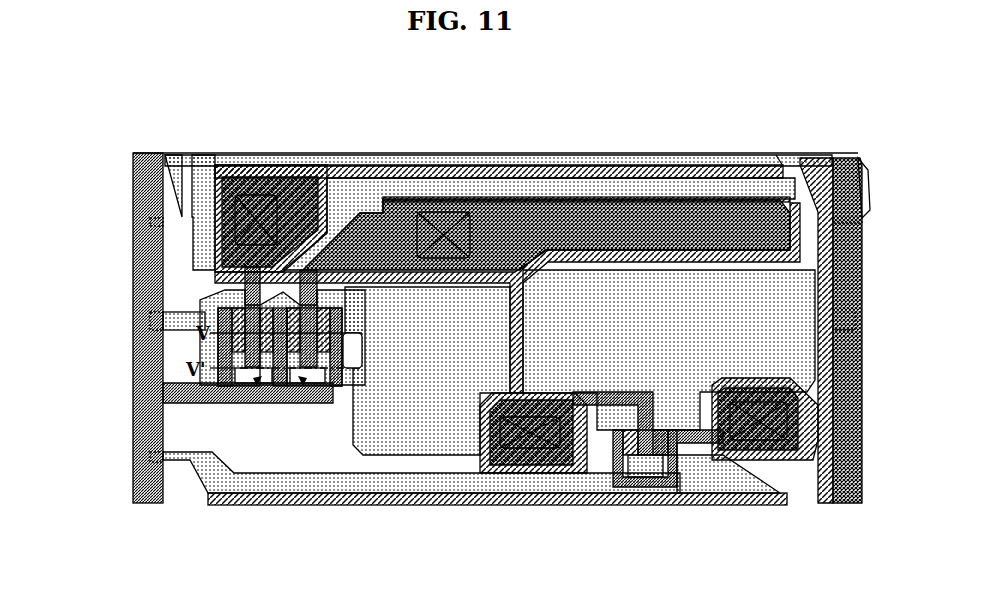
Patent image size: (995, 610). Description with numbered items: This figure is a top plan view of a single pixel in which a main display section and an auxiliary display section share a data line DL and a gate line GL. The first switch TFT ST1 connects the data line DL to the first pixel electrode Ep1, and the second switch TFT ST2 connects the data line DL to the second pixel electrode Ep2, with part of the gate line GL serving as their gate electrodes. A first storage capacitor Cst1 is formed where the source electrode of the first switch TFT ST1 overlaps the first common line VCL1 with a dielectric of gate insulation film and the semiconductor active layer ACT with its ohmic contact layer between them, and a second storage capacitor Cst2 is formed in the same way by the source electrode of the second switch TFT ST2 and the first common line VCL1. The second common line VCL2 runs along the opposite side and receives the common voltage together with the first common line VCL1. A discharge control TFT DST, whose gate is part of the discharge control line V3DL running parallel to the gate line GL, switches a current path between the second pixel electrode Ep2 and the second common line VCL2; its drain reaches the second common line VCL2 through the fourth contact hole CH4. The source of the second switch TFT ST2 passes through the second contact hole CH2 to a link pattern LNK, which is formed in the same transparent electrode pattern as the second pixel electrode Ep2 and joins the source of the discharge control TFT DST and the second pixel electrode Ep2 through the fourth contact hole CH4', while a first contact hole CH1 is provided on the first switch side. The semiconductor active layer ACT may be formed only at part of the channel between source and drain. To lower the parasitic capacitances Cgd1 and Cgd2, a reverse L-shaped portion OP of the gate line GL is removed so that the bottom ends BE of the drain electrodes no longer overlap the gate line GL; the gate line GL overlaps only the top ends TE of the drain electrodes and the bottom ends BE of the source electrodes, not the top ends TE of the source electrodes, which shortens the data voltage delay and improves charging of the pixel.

The first contact hole CH1 is at (258, 190).
The second contact hole CH2 is at (440, 212).
The fourth contact hole CH4 is at (765, 469).
The fourth contact hole CH4' is at (533, 476).
The first storage capacitor Cst1 is at (300, 172).
The second storage capacitor Cst2 is at (580, 205).
The first pixel electrode Ep1 is at (778, 162).
The second pixel electrode Ep2 is at (387, 506).
The first common line VCL1 is at (148, 222).
The second common line VCL2 is at (845, 157).
The semiconductor active layer ACT is at (245, 296).
The gate line GL is at (148, 318).
The data line DL is at (130, 388).
The discharge control line V3DL is at (148, 456).
The top end TE is at (343, 311).
The bottom end BE is at (335, 390).
The first switch TFT ST1 is at (243, 413).
The second switch TFT ST2 is at (317, 413).
The gate-drain capacitance of the first switch TFT Cgd1 is at (283, 402).
The gate-drain capacitance of the second switch TFT Cgd2 is at (300, 402).
The removed portion OP is at (352, 425).
The link pattern LNK is at (508, 395).
The discharge control TFT DST is at (630, 510).